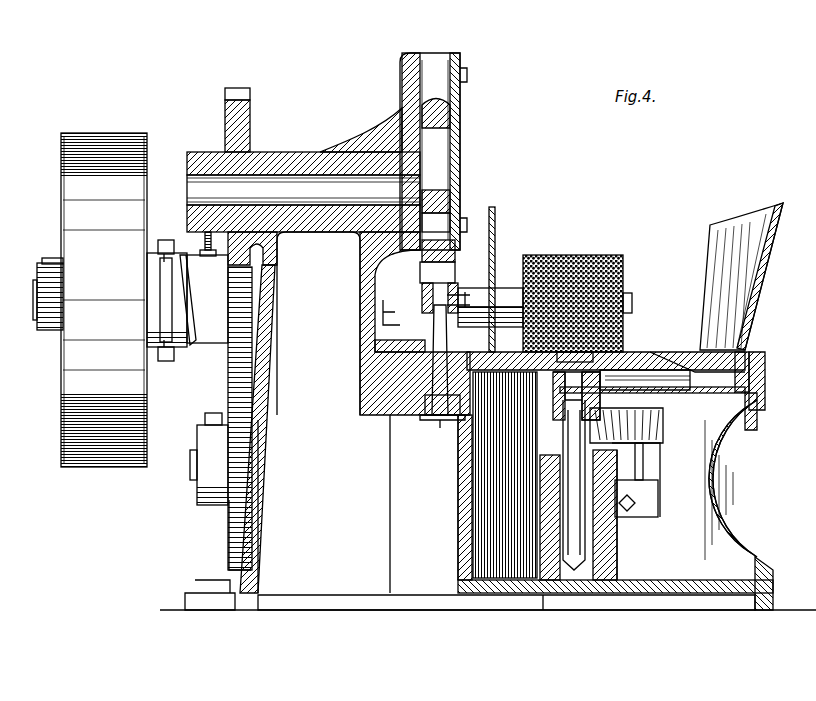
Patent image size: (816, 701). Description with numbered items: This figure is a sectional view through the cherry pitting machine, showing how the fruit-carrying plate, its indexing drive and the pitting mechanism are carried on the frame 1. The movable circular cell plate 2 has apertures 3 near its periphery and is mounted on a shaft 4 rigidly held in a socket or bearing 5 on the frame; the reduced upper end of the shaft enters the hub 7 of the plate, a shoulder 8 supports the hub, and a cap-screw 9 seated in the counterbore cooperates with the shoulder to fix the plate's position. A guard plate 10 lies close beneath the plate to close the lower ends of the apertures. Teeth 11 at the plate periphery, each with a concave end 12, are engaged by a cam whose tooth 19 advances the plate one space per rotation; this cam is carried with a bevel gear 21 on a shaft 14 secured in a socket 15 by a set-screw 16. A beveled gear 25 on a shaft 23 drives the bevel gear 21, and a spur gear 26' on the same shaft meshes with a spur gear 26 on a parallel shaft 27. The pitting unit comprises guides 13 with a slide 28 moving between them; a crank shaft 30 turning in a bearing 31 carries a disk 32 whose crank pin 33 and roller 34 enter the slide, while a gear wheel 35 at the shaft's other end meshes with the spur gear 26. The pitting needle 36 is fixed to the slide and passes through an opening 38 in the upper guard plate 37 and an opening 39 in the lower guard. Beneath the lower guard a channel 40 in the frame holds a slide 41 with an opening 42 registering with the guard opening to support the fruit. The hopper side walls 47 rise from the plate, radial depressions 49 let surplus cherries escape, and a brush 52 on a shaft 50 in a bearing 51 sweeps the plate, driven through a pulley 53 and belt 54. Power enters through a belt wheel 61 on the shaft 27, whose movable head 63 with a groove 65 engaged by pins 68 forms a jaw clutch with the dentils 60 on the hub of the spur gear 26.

The frame 1 is at (760, 558).
The cell plate 2 is at (628, 362).
The apertures 3 is at (766, 377).
The shaft 4 is at (565, 434).
The socket or bearing 5 is at (305, 375).
The hub 7 is at (652, 381).
The shoulder 8 is at (554, 407).
The cap-screw 9 is at (647, 382).
The guard plate 10 is at (647, 382).
The teeth 11 is at (745, 355).
The concave portion 12 is at (766, 352).
The guides 13 is at (436, 58).
The shaft 14 is at (643, 465).
The bearing or socket 15 is at (658, 490).
The set-screw 16 is at (650, 512).
The tooth 19 is at (492, 320).
The bevel gear 21 is at (655, 420).
The shaft 23 is at (192, 465).
The beveled gear 25 is at (640, 447).
The spur gear 26 is at (221, 418).
The spur gear 26' is at (220, 535).
The shaft 27 is at (36, 305).
The slide 28 is at (452, 115).
The crank shaft 30 is at (288, 185).
The bearing 31 is at (328, 421).
The disk 32 is at (398, 126).
The crank pin 33 is at (452, 215).
The roller 34 is at (455, 210).
The gear wheel 35 is at (226, 92).
The pitting needle 36 is at (430, 314).
The upper guard plate 37 is at (375, 350).
The opening 38 is at (425, 350).
The opening 39 is at (432, 388).
The channel or slot 40 is at (425, 406).
The slide 41 is at (420, 418).
The opening 42 is at (440, 425).
The side walls 47 is at (765, 282).
The radial depression 49 is at (680, 360).
The shaft 50 is at (632, 298).
The bearing 51 is at (500, 300).
The brush 52 is at (557, 256).
The sheave or pulley 53 is at (452, 262).
The belt or band 54 is at (460, 296).
The teeth or dentils 60 is at (186, 256).
The belt wheel 61 is at (94, 134).
The head 63 is at (162, 300).
The groove 65 is at (160, 272).
The pins 68 is at (166, 240).